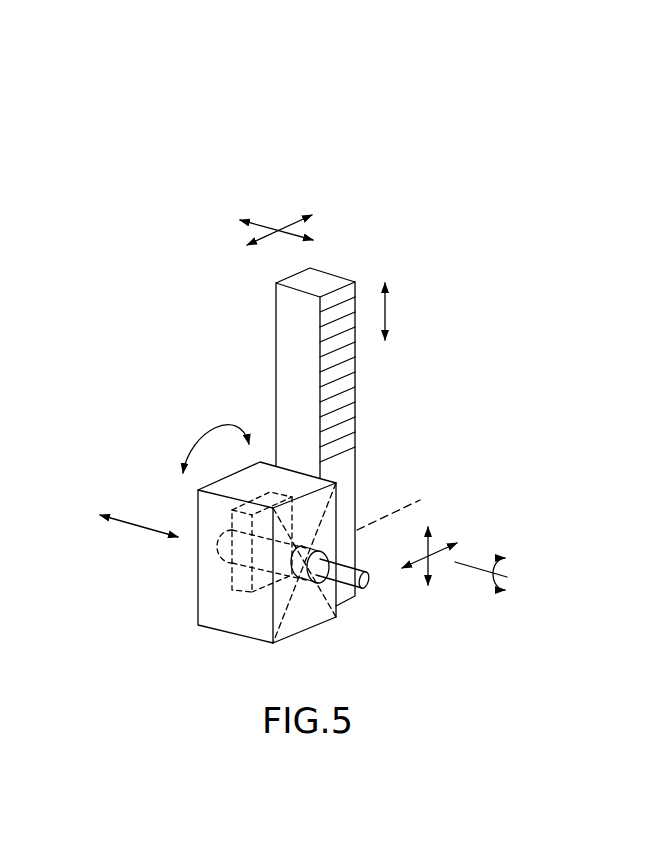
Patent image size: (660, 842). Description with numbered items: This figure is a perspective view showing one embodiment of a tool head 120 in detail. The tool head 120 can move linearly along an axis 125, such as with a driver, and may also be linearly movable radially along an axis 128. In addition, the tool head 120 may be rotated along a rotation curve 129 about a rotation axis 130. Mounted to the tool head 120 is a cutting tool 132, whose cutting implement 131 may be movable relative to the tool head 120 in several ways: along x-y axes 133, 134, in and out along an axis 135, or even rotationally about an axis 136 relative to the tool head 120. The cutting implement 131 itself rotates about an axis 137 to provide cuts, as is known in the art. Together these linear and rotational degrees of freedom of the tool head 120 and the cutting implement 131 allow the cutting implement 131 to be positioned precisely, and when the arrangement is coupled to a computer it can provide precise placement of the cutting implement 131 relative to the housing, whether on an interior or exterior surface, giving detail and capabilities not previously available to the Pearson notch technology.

The tool head 120 is at (376, 408).
The axis 125 is at (385, 305).
The axis 128 is at (275, 232).
The rotation curve 129 is at (292, 235).
The rotation axis 130 is at (343, 394).
The cutting implement 131 is at (378, 585).
The cutting tool 132 is at (218, 422).
The x-y axis 133 is at (437, 542).
The x-y axis 134 is at (432, 563).
The axis 135 is at (140, 522).
The axis 136 is at (402, 503).
The axis 137 is at (508, 577).